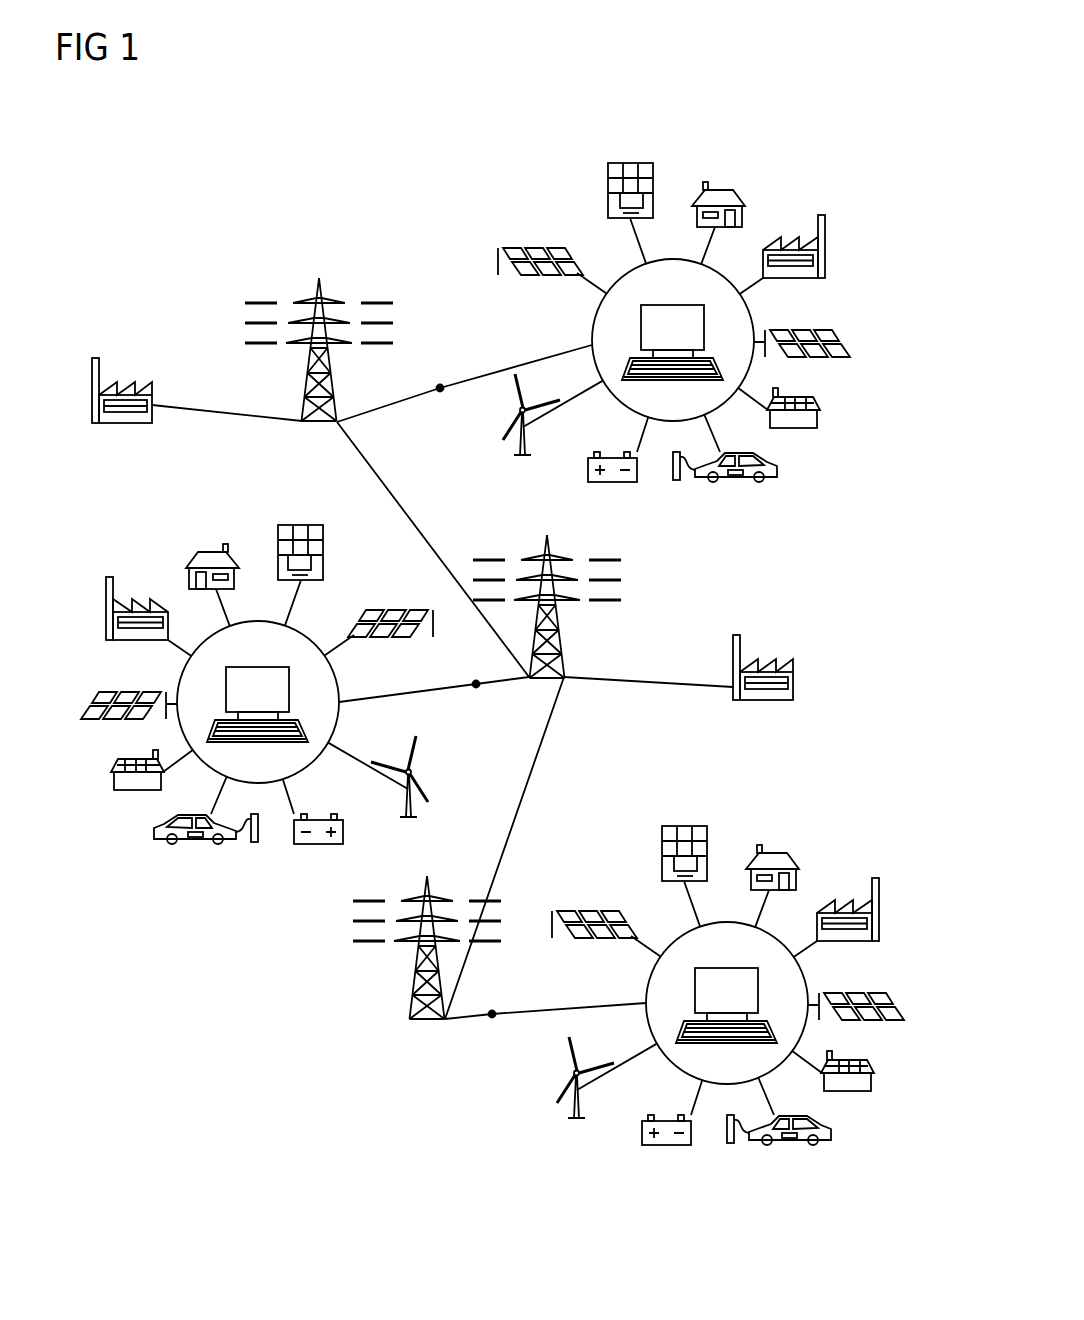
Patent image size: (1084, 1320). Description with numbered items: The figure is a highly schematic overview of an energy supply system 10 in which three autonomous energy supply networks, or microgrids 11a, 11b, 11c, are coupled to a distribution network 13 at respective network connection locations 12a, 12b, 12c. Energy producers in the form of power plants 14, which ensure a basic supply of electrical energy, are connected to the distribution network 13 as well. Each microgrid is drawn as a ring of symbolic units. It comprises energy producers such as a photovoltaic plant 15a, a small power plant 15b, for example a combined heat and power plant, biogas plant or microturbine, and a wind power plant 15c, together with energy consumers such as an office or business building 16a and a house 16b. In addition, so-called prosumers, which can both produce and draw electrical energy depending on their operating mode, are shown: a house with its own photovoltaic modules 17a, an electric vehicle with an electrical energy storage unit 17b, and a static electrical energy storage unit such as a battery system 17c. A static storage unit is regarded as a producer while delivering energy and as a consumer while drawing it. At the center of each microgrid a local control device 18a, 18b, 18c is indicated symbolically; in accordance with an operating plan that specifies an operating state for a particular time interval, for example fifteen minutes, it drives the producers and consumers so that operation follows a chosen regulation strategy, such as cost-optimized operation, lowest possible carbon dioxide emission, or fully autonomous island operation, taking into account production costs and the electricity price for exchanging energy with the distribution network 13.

The energy supply system 10 is at (330, 182).
The autonomous energy supply network (microgrid) 11a is at (678, 281).
The autonomous energy supply network (microgrid) 11b is at (257, 714).
The autonomous energy supply network (microgrid) 11c is at (728, 1016).
The network connection location 12a is at (440, 388).
The network connection location 12b is at (476, 684).
The network connection location 12c is at (492, 1017).
The distribution network 13 is at (583, 733).
The power plant 14 is at (122, 385).
The energy producer (photovoltaic plant) 15a is at (528, 248).
The energy producer (small power plant) 15b is at (785, 240).
The energy producer (wind power plant) 15c is at (513, 445).
The energy consumer (office or business building) 16a is at (632, 163).
The energy consumer (house) 16b is at (722, 190).
The prosumer (house with photovoltaic modules) 17a is at (820, 398).
The prosumer (electric vehicle with energy storage unit) 17b is at (777, 470).
The prosumer (static electrical energy storage unit) 17c is at (588, 472).
The local control device 18a is at (672, 305).
The local control device 18b is at (257, 666).
The local control device 18c is at (727, 967).